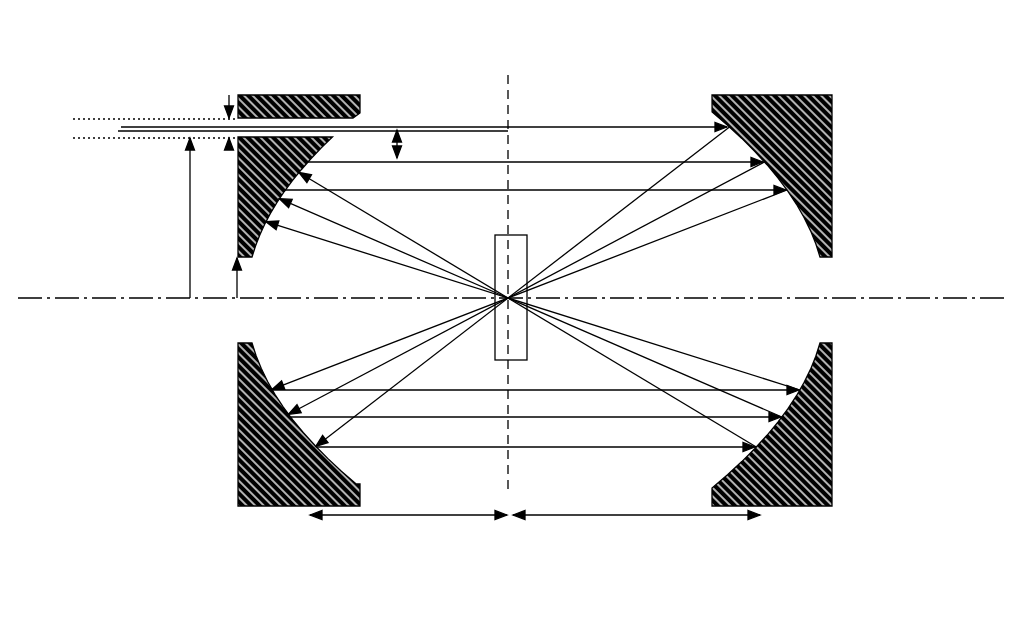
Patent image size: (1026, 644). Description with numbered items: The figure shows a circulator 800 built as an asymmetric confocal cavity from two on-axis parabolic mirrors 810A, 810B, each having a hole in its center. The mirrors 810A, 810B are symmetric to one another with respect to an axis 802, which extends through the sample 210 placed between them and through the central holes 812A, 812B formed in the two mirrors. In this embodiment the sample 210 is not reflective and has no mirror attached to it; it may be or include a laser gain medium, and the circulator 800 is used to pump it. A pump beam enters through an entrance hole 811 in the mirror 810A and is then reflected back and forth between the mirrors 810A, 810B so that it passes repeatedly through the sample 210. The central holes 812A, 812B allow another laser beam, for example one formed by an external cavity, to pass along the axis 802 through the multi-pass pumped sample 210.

The circulator 800 is at (193, 42).
The axis 802 is at (62, 302).
The sample 210 is at (528, 342).
The mirror 810A is at (296, 95).
The mirror 810B is at (775, 94).
The pump beam entrance hole 811 is at (362, 123).
The central hole 812A is at (228, 320).
The central hole 812B is at (826, 313).